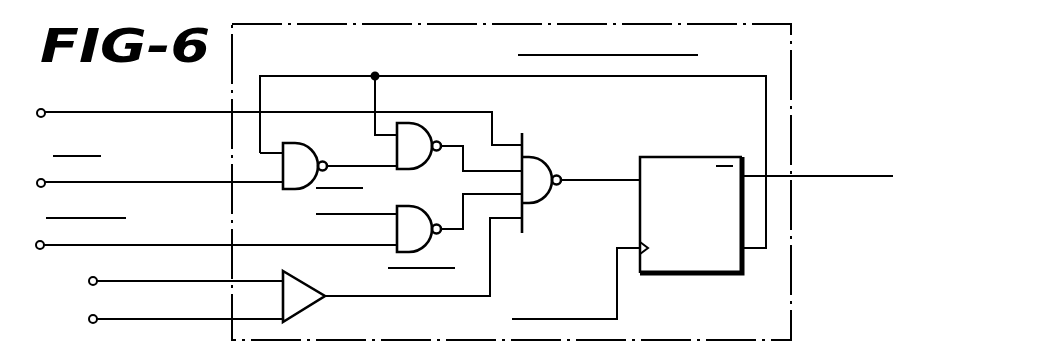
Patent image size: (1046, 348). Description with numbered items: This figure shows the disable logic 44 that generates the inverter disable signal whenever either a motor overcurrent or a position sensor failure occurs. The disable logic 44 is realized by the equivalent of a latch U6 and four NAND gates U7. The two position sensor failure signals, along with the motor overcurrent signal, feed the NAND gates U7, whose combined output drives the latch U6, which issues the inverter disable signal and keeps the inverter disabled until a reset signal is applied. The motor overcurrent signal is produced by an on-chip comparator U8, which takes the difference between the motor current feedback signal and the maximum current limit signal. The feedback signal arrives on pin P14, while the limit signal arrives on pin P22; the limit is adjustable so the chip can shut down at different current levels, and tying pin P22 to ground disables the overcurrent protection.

The disable logic 44 is at (801, 85).
The NAND gates U7 is at (430, 184).
The latch U6 is at (691, 202).
The comparator U8 is at (308, 292).
The pin P14 is at (164, 276).
The pin P22 is at (162, 313).